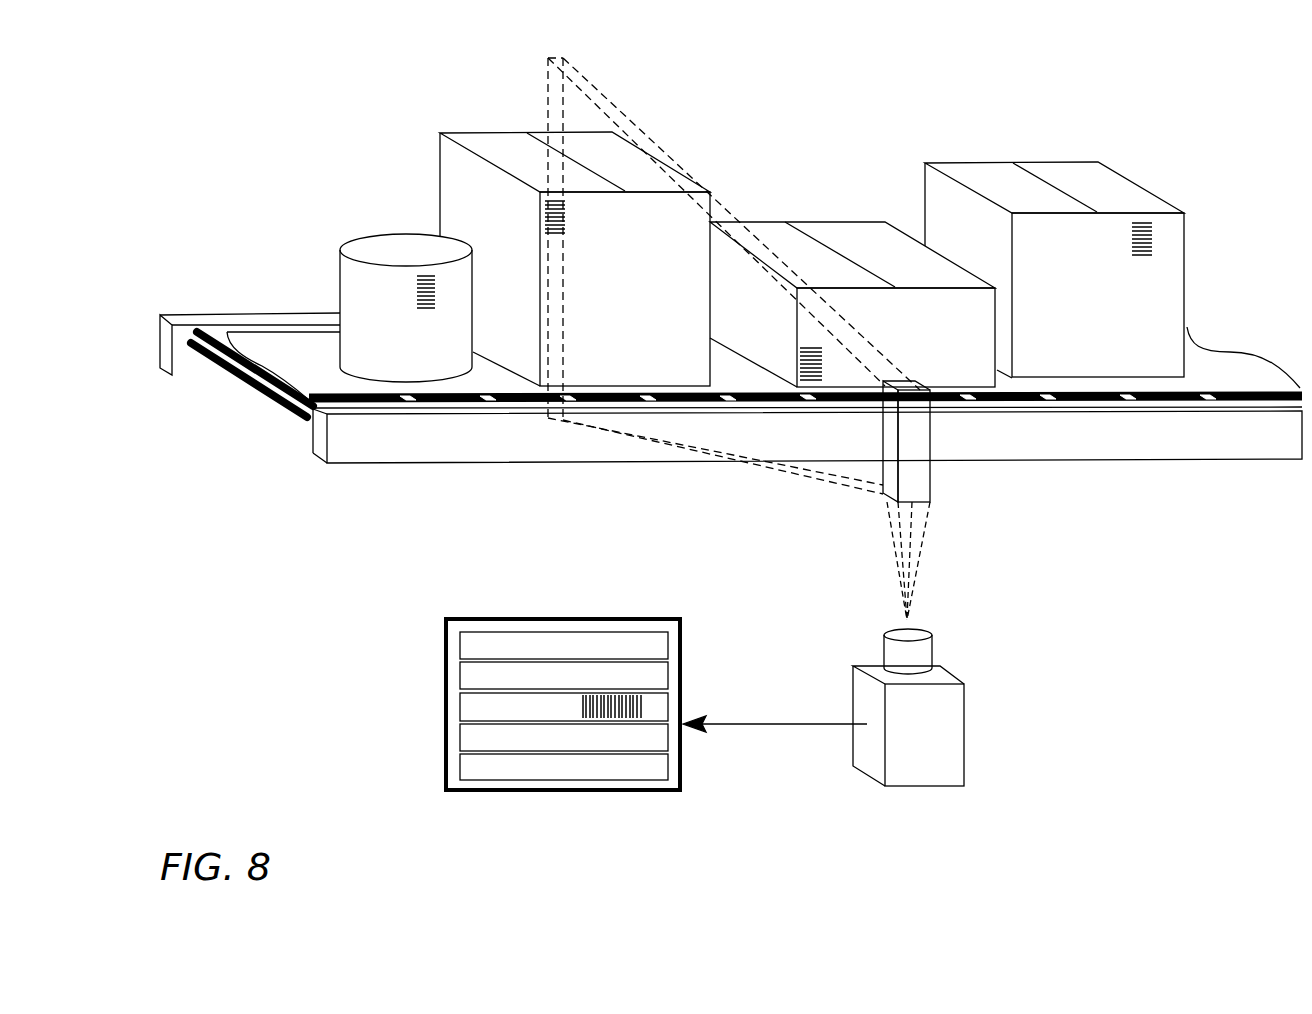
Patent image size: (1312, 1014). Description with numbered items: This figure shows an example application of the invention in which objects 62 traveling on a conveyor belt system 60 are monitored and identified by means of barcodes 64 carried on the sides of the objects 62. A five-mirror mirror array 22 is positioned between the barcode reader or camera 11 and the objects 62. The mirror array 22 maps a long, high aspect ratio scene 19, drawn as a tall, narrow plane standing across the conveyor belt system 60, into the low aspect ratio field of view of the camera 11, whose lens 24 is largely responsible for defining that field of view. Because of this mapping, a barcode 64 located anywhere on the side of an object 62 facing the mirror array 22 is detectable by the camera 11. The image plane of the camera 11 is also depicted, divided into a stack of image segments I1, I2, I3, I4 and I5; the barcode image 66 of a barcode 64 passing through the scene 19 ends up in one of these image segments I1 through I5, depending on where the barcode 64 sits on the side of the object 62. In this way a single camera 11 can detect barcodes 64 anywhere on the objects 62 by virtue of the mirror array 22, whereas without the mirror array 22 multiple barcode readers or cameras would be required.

The camera 11 is at (948, 761).
The scene 19 is at (547, 100).
The mirror array 22 is at (921, 477).
The lens 24 is at (919, 656).
The conveyor belt system 60 is at (280, 444).
The objects 62 is at (455, 213).
The barcodes 64 is at (543, 203).
The barcode image 66 is at (564, 682).
The image segment I1 is at (468, 682).
The image segment I2 is at (470, 767).
The image segment I3 is at (468, 709).
The image segment I4 is at (470, 737).
The image segment I5 is at (467, 645).